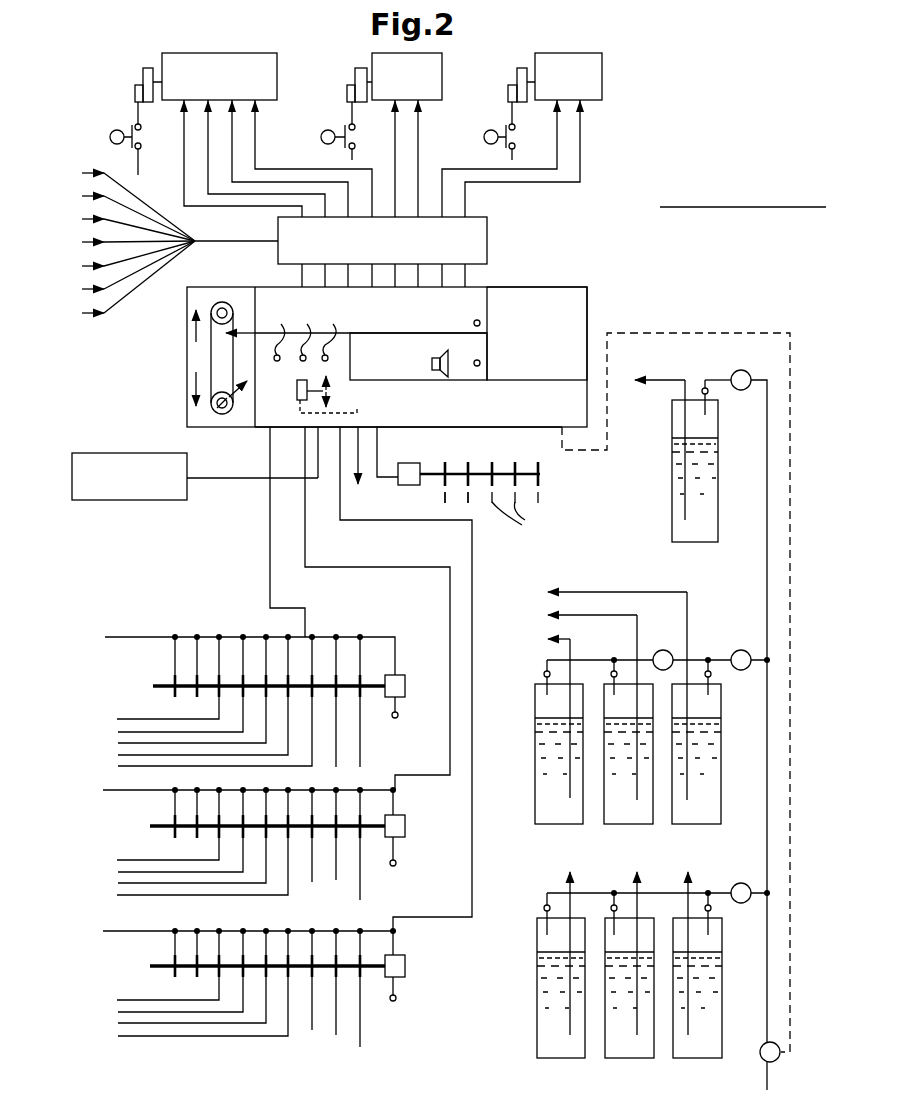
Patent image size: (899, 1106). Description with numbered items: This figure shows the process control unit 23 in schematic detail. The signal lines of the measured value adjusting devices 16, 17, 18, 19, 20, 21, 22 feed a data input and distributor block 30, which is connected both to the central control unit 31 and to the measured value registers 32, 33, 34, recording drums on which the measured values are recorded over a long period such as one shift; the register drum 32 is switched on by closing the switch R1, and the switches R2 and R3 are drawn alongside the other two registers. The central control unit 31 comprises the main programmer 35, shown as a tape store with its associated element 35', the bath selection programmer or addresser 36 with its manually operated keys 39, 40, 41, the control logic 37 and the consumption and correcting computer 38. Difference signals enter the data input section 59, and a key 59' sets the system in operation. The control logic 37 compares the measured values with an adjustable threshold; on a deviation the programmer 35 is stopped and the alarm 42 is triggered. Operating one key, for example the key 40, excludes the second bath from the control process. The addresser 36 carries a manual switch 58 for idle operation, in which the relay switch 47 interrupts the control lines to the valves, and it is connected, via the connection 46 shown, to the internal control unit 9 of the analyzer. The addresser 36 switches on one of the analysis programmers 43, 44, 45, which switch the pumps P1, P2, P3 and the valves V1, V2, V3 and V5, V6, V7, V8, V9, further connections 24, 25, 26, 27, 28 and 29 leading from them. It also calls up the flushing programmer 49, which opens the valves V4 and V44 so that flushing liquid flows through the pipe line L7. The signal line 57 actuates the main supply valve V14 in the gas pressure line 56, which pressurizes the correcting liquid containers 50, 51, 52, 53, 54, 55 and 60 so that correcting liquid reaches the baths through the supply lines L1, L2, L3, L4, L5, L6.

The measured value register 32 is at (277, 74).
The measured value register 33 is at (442, 74).
The measured value register 34 is at (602, 80).
The switch R1 is at (116, 128).
The relay R2 is at (326, 128).
The relay R3 is at (488, 128).
The measured value adjusting device 16 is at (127, 273).
The measured value adjusting device 17 is at (127, 285).
The measured value adjusting device 18 is at (127, 261).
The measured value adjusting device 19 is at (127, 199).
The measured value adjusting device 20 is at (127, 211).
The measured value adjusting device 21 is at (127, 222).
The measured value adjusting device 22 is at (127, 242).
The process control unit 23 is at (743, 191).
The data input and distributor block 30 is at (506, 244).
The central control unit 31 is at (538, 266).
The main programmer 35 is at (137, 351).
The main programmer take-up reel 35' is at (225, 421).
The manually operated key 39 is at (276, 329).
The manually operated key 40 is at (306, 329).
The manually operated key 41 is at (335, 329).
The data input section 59 is at (382, 312).
The key 59' is at (461, 312).
The alarm system 42 is at (437, 350).
The consumption and correcting computer 38 is at (537, 334).
The control logic 37 is at (418, 356).
The bath selection programmer 36 is at (408, 409).
The manual switch 58 is at (297, 393).
The internal control unit 9 is at (103, 454).
The control line 46 is at (268, 500).
The relay switch 47 is at (359, 471).
The flushing programmer 49 is at (385, 523).
The valve V4 is at (445, 499).
The valve V44 is at (468, 502).
The signal line 57 is at (690, 333).
The pipe line L7 is at (668, 432).
The container 60 is at (690, 543).
The gas pressure line 56 is at (767, 614).
The main supply valve V14 is at (577, 450).
The supply line L1 is at (542, 711).
The supply line L2 is at (576, 700).
The supply line L3 is at (601, 688).
The supply line L4 is at (568, 937).
The supply line L5 is at (637, 937).
The supply line L6 is at (687, 937).
The container 50 is at (561, 975).
The container 51 is at (629, 975).
The container 52 is at (697, 975).
The container 53 is at (559, 743).
The container 54 is at (628, 743).
The container 55 is at (696, 743).
The analysis programmer 43 is at (430, 681).
The analysis programmer 44 is at (409, 836).
The analysis programmer 45 is at (430, 946).
The pump P1 is at (235, 650).
The pump P2 is at (132, 790).
The pump P3 is at (132, 931).
The valve V1 is at (197, 697).
The valve V2 is at (197, 838).
The valve V3 is at (197, 977).
The valve V5 is at (117, 860).
The valve V6 is at (118, 872).
The valve V7 is at (117, 719).
The valve V8 is at (118, 732).
The valve V9 is at (118, 743).
The line 24 is at (362, 884).
The line 25 is at (362, 1025).
The line 26 is at (421, 890).
The line 27 is at (118, 883).
The line 28 is at (312, 882).
The line 29 is at (336, 880).